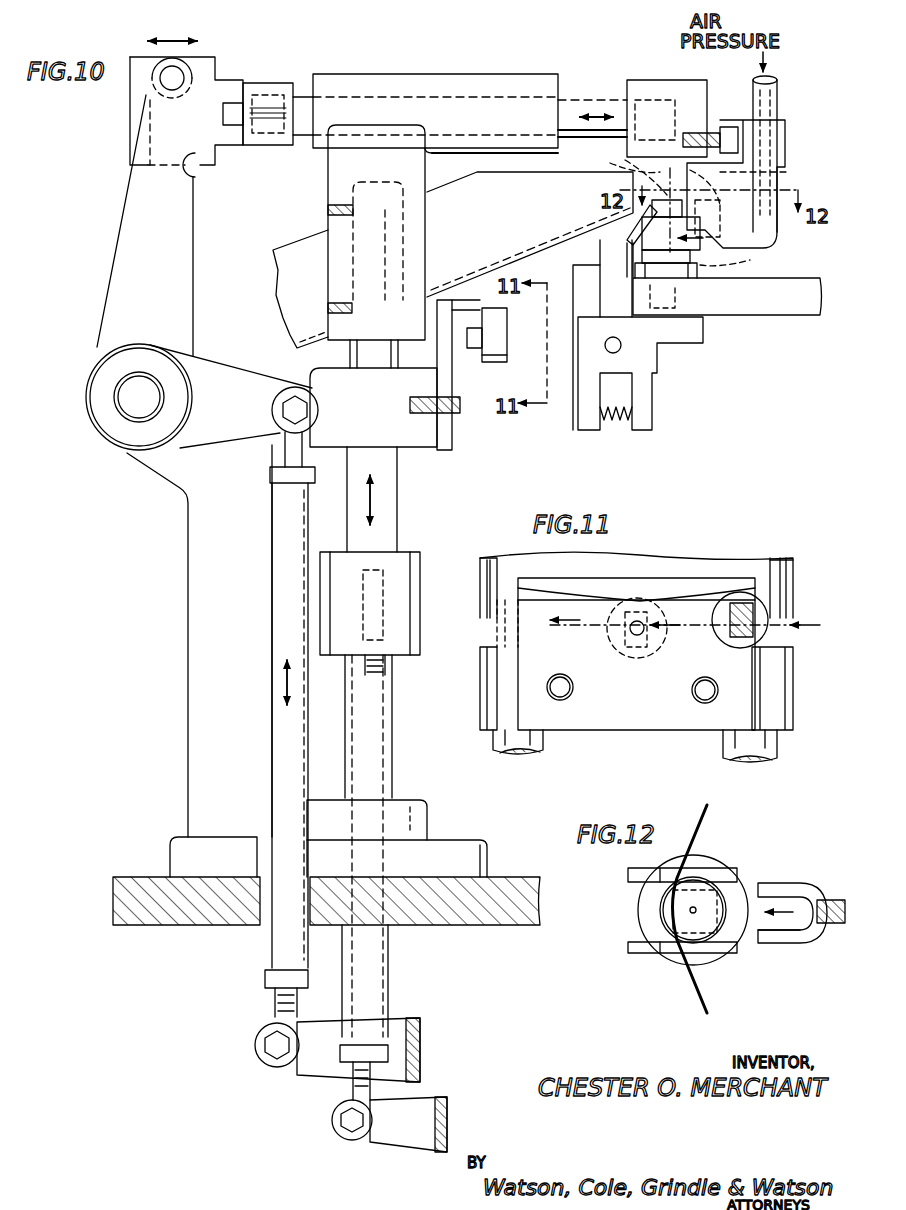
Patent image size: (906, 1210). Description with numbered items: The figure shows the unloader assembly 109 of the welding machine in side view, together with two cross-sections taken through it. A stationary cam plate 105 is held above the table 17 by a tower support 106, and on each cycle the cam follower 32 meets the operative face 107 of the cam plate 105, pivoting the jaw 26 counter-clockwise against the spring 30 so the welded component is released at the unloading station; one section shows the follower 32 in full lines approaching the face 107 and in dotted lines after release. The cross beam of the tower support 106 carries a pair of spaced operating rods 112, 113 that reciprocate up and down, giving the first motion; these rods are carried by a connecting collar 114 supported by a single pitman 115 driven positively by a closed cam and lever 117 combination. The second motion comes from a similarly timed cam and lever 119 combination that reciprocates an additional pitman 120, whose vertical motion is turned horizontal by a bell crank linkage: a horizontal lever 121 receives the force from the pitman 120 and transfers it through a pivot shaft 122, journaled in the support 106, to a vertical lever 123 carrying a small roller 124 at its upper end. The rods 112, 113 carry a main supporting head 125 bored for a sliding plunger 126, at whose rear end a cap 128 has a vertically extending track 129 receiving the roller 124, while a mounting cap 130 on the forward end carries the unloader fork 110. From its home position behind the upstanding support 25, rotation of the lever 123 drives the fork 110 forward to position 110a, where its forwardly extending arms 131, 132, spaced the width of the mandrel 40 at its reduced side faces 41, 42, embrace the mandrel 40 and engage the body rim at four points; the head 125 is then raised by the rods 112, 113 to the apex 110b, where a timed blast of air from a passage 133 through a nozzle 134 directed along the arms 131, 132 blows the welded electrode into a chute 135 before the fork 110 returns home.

In FIG. 10, the table 17 is at (120, 877).
In FIG. 10, the upstanding support 25 is at (705, 265).
In FIG. 10, the jaw 26 is at (615, 305).
In FIG. 10, the spring 30 is at (610, 420).
In FIG. 10, the cam follower 32 is at (490, 362).
In FIG. 11, the cam follower 32 is at (770, 600).
In FIG. 12, the mandrel 40 is at (665, 920).
In FIG. 12, the reduced side face 41 is at (700, 866).
In FIG. 12, the reduced side face 42 is at (712, 960).
In FIG. 10, the stationary cam plate 105 is at (437, 300).
In FIG. 11, the stationary cam plate 105 is at (643, 699).
In FIG. 10, the tower support 106 is at (188, 635).
In FIG. 11, the tower support 106 is at (497, 698).
In FIG. 10, the operative face 107 is at (470, 310).
In FIG. 11, the operative face 107 is at (700, 600).
In FIG. 10, the double motion unloader assembly 109 is at (550, 55).
In FIG. 10, the unloader fork 110 is at (803, 167).
In FIG. 10, the full forward position of the unloader fork 110a is at (745, 260).
In FIG. 10, the apex of the fork path 110b is at (610, 160).
In FIG. 10, the operating rod 112 is at (393, 525).
In FIG. 11, the operating rod 112 is at (500, 743).
In FIG. 11, the operating rod 113 is at (760, 750).
In FIG. 10, the connecting collar 114 is at (410, 640).
In FIG. 10, the pitman 115 is at (400, 805).
In FIG. 10, the lever 117 is at (410, 1140).
In FIG. 10, the lever 119 is at (320, 1060).
In FIG. 10, the pitman 120 is at (280, 585).
In FIG. 10, the horizontal lever 121 is at (246, 416).
In FIG. 10, the pivot shaft 122 is at (130, 408).
In FIG. 10, the vertical lever 123 is at (171, 258).
In FIG. 10, the roller 124 is at (197, 57).
In FIG. 10, the main supporting head 125 is at (393, 75).
In FIG. 10, the sliding plunger 126 is at (585, 100).
In FIG. 10, the cap 128 is at (250, 90).
In FIG. 10, the vertically extending track 129 is at (150, 57).
In FIG. 10, the mounting cap 130 is at (680, 88).
In FIG. 12, the forwardly extending arm 131 is at (782, 888).
In FIG. 10, the forwardly extending arm 132 is at (760, 244).
In FIG. 12, the forwardly extending arm 132 is at (778, 940).
In FIG. 10, the passage 133 is at (770, 176).
In FIG. 10, the nozzle 134 is at (790, 198).
In FIG. 10, the chute 135 is at (486, 217).